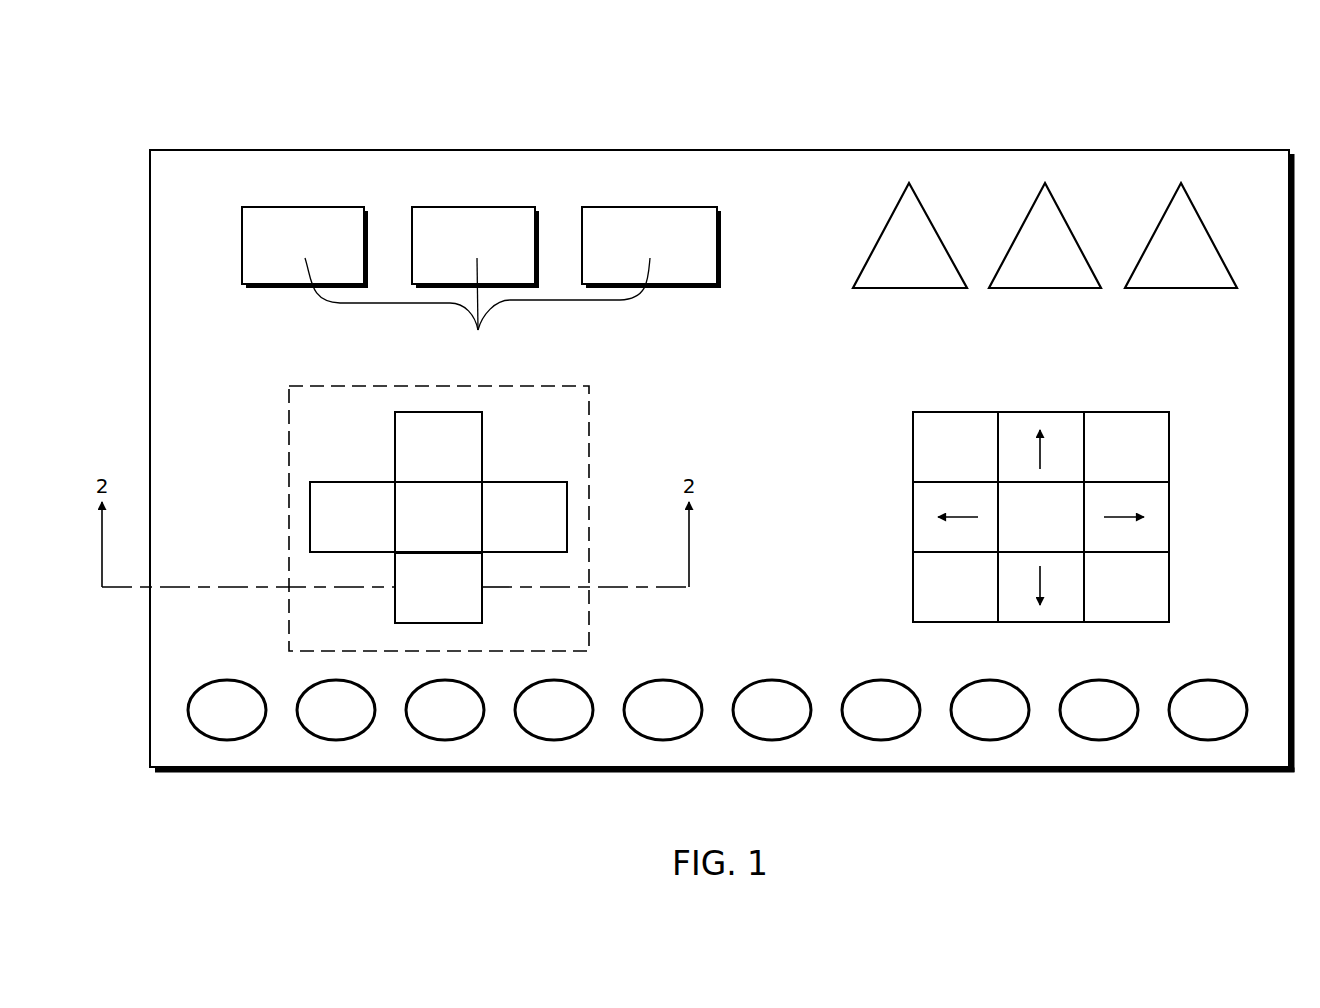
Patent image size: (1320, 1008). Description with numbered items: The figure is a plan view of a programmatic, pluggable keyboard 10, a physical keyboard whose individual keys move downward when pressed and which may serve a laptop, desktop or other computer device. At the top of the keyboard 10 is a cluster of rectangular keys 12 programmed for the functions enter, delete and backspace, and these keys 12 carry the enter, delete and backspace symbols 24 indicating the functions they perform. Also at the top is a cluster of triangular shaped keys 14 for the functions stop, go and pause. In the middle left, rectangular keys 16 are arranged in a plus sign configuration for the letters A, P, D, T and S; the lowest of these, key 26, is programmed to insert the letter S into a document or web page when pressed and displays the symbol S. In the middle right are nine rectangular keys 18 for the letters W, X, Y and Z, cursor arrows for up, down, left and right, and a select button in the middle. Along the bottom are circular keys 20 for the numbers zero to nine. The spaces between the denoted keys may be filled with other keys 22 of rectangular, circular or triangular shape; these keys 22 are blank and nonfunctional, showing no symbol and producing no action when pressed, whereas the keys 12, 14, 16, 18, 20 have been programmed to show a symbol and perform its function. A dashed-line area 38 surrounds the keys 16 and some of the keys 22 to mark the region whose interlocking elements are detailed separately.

The programmatic, pluggable keyboard 10 is at (1178, 92).
The rectangular keys 12 is at (469, 194).
The triangular shaped keys 14 is at (1029, 194).
The rectangular keys 16 is at (386, 464).
The keys 18 is at (1180, 434).
The circular keys 20 is at (192, 733).
The keys 22 is at (817, 658).
The symbols 24 is at (477, 310).
The key 26 is at (386, 600).
The area 38 is at (589, 418).